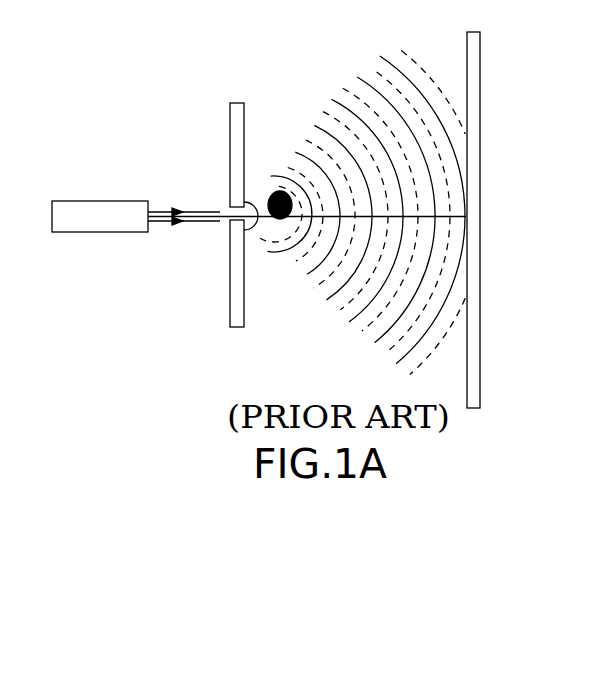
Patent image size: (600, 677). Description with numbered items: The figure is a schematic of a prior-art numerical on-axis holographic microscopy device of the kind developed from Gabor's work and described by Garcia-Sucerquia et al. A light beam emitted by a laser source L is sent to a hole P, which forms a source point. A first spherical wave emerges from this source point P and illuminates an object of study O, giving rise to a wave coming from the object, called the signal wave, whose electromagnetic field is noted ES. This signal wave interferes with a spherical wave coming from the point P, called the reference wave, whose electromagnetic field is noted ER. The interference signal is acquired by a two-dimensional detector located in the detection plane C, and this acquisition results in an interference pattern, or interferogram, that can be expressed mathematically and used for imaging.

The laser source L is at (136, 234).
The hole P is at (231, 215).
The object of study O is at (277, 233).
The electromagnetic field of the signal wave ES is at (332, 97).
The electromagnetic field of the reference wave ER is at (398, 73).
The detection plane C is at (488, 220).